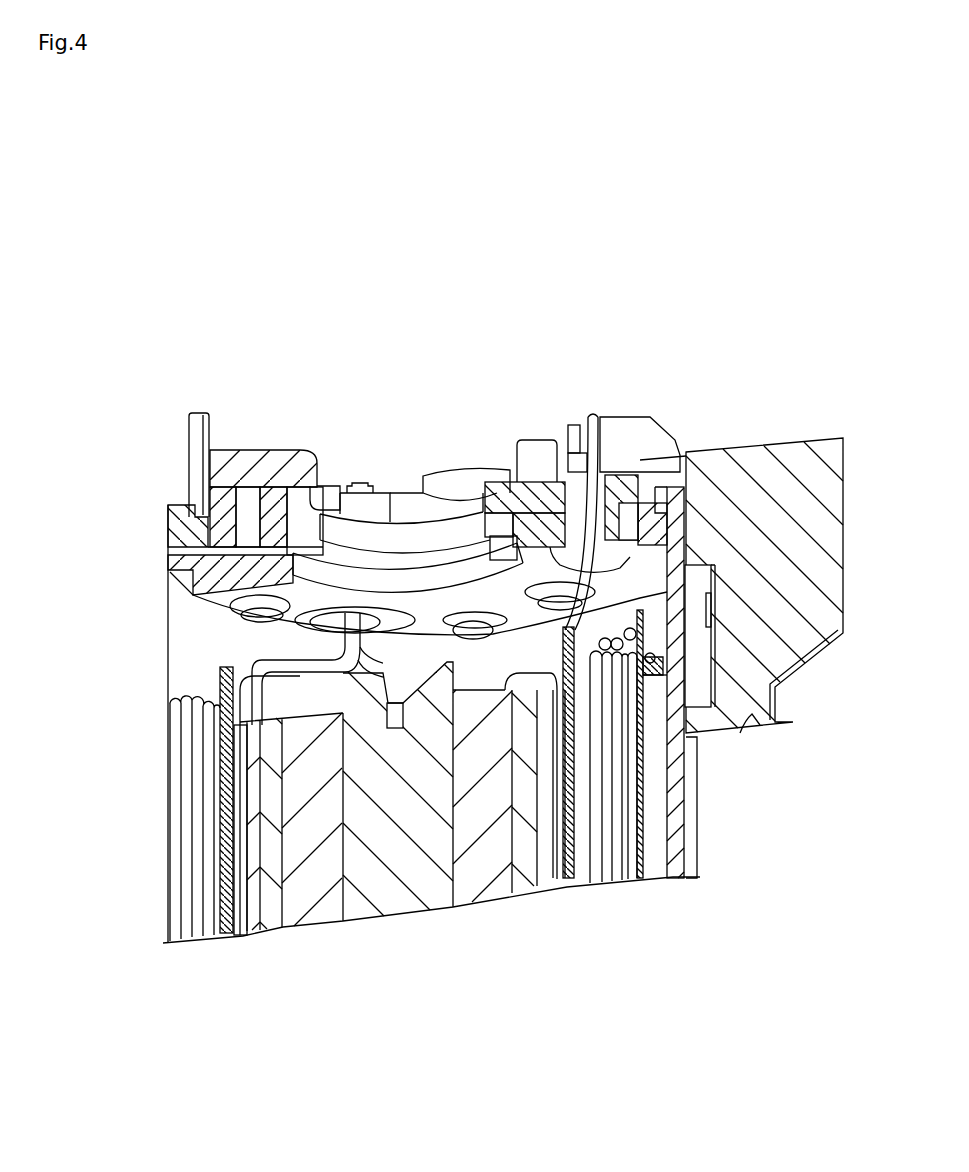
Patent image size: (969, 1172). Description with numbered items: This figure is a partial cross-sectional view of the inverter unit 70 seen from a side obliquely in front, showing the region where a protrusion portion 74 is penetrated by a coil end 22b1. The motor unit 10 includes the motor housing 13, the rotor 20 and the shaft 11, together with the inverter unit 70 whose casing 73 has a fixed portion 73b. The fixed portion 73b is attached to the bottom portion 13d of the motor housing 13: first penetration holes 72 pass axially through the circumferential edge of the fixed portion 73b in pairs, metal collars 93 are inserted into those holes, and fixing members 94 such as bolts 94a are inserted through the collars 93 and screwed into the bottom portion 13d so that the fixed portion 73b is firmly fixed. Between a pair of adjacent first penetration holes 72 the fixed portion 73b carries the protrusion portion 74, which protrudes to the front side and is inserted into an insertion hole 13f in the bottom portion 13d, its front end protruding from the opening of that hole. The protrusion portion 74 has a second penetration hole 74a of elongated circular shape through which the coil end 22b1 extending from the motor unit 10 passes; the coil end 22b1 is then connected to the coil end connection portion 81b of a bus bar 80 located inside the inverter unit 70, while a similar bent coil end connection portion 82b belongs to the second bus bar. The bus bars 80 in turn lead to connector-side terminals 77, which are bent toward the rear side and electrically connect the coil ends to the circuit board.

The motor unit 10 is at (167, 840).
The shaft 11 is at (375, 880).
The motor housing 13 is at (680, 797).
The bottom portion 13d is at (193, 571).
The insertion hole 13f is at (648, 445).
The rotor 20 is at (237, 899).
The coil end 22b1 is at (352, 482).
The inverter unit 70 is at (795, 428).
The first penetration hole 72 is at (267, 483).
The inverter unit casing portion 73 is at (795, 627).
The fixed portion 73b is at (505, 465).
The protrusion portion 74 is at (655, 500).
The second penetration hole 74a is at (550, 440).
The connector-side terminal 77 is at (191, 448).
The bus bar 80 is at (572, 417).
The coil end connection portion 81b is at (606, 428).
The coil end connection portion 82b is at (380, 503).
The collar 93 is at (217, 510).
The fixing member 94 is at (445, 478).
The bolt 94a is at (235, 457).